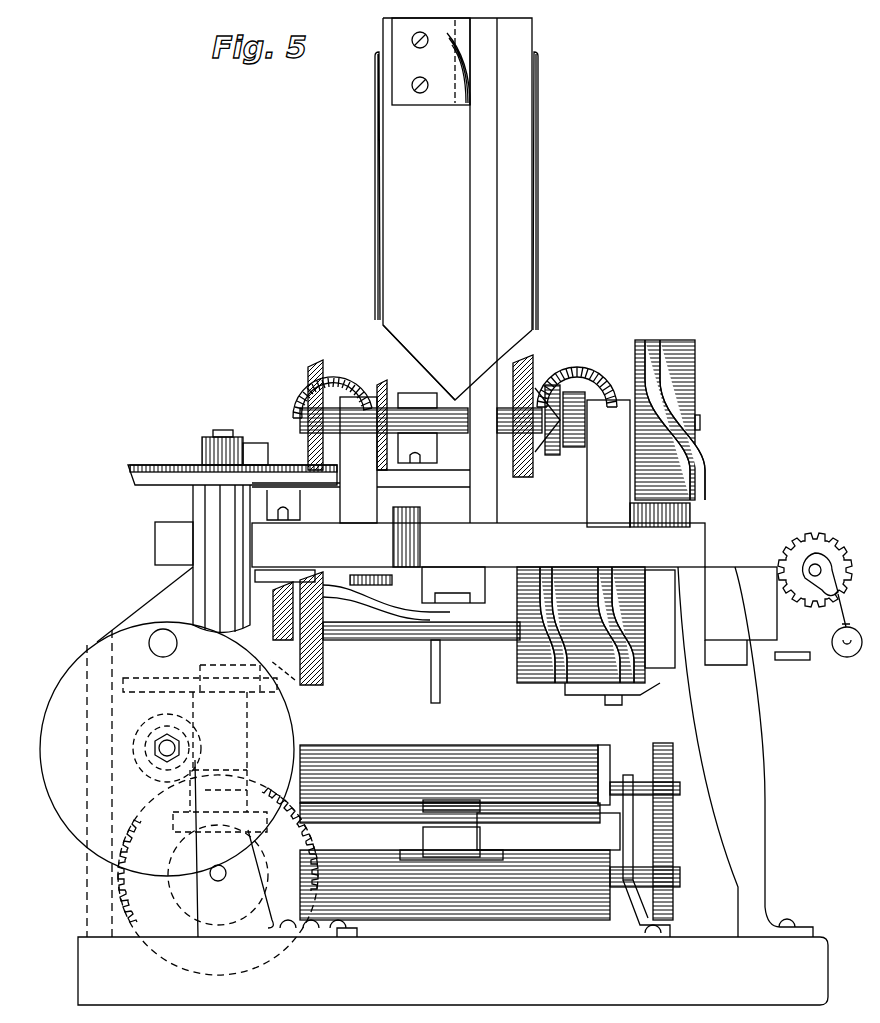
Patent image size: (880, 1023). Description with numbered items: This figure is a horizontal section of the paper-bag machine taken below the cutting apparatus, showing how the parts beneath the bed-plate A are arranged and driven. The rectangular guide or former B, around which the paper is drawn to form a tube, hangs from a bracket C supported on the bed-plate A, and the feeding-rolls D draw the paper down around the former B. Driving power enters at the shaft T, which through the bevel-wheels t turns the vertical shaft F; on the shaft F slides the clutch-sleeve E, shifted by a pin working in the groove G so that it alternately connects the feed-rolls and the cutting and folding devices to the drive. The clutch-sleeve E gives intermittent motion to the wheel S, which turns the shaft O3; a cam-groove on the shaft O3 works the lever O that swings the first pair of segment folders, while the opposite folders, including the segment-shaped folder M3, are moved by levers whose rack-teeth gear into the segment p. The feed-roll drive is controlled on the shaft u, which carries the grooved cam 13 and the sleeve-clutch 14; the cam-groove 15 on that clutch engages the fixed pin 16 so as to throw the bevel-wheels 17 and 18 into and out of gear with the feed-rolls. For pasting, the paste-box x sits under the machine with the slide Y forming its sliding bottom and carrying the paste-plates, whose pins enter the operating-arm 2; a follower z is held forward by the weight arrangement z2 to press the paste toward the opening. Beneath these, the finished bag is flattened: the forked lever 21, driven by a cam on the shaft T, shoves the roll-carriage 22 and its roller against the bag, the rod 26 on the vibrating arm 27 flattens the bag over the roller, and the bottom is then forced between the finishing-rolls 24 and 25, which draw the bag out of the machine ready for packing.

The bed-plate A is at (625, 555).
The rectangular guide or former B is at (457, 209).
The bracket C is at (483, 270).
The feeding-rolls D is at (375, 290).
The shifting device (clutch-sleeve) E is at (198, 545).
The vertical shaft F is at (228, 420).
The groove with pin G is at (287, 627).
The segment-shaped folder M3 is at (453, 585).
The lever O is at (518, 588).
The shaft O3 is at (405, 640).
The wheel S is at (290, 686).
The shaft T is at (220, 876).
The bevel-wheel t is at (180, 818).
The slide Y is at (792, 668).
The paste-box x is at (741, 616).
The follower z is at (828, 620).
The rack, pinion, and weight z2 is at (822, 538).
The segment p is at (376, 587).
The shaft u is at (421, 428).
The operating-arm 2 is at (450, 686).
The grooved cam 13 is at (688, 368).
The sleeve-clutch 14 is at (550, 452).
The cam-groove 15 is at (586, 354).
The fixed pin 16 is at (608, 463).
The bevel-wheel 17 is at (318, 370).
The bevel-wheel 18 is at (519, 368).
The forked lever 21 is at (390, 820).
The roll-carriage 22 is at (510, 830).
The finishing-roll 24 is at (508, 755).
The finishing-roll 25 is at (515, 920).
The rod 26 is at (600, 790).
The vibrating arm 27 is at (620, 858).